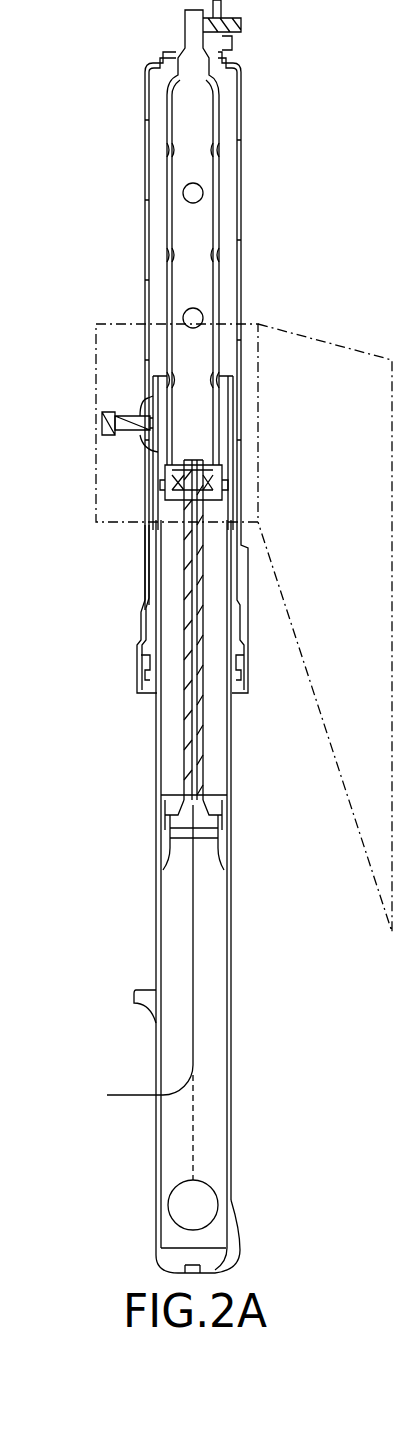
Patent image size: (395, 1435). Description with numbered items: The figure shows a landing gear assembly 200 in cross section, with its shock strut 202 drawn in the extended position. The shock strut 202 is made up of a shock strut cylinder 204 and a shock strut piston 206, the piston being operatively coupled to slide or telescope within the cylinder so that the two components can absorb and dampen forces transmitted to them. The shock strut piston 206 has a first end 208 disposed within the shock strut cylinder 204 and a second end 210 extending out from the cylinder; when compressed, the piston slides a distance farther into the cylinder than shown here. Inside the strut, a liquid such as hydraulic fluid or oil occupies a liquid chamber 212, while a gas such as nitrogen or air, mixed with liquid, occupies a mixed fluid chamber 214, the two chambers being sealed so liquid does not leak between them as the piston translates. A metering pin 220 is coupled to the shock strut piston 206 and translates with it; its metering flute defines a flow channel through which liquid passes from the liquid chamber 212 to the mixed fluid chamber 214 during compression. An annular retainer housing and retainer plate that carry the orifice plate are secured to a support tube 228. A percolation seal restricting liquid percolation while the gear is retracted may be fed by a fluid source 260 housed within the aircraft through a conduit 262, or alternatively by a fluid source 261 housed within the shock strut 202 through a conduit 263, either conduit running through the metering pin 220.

The landing gear assembly 200 is at (122, 112).
The shock strut 202 is at (241, 177).
The shock strut cylinder 204 is at (241, 227).
The shock strut piston 206 is at (231, 998).
The first end 208 is at (233, 378).
The second end 210 is at (232, 1195).
The liquid chamber 212 is at (175, 717).
The mixed fluid chamber 214 is at (150, 250).
The metering pin 220 is at (200, 744).
The support tube 228 is at (217, 152).
The fluid source 260 is at (94, 1106).
The fluid source 261 is at (209, 1218).
The conduit 262 is at (190, 646).
The conduit 263 is at (193, 1120).